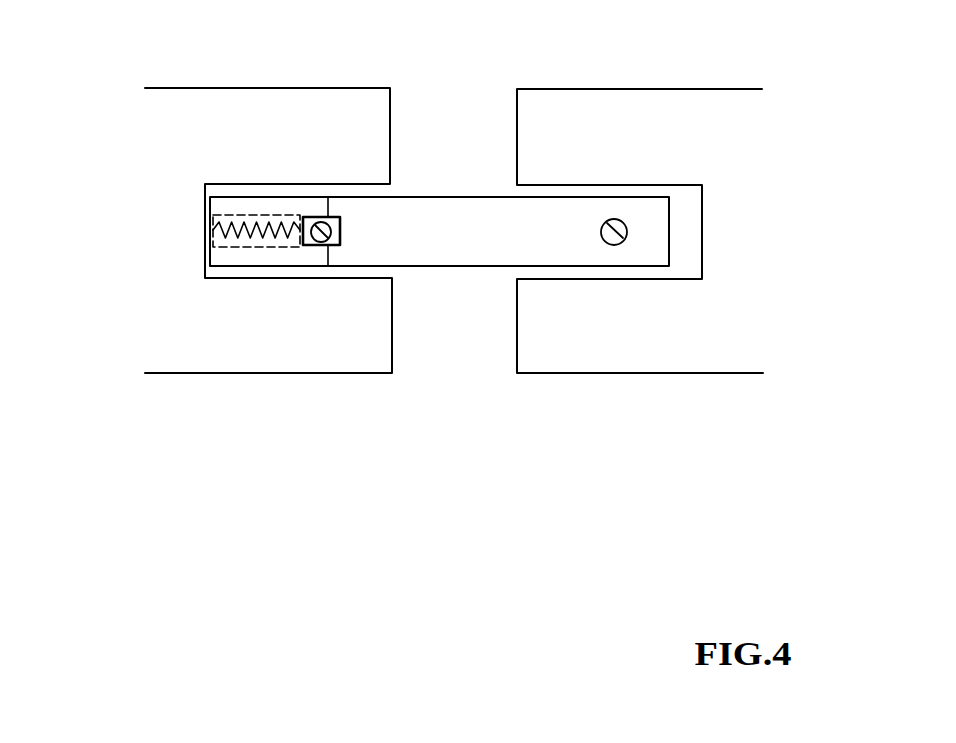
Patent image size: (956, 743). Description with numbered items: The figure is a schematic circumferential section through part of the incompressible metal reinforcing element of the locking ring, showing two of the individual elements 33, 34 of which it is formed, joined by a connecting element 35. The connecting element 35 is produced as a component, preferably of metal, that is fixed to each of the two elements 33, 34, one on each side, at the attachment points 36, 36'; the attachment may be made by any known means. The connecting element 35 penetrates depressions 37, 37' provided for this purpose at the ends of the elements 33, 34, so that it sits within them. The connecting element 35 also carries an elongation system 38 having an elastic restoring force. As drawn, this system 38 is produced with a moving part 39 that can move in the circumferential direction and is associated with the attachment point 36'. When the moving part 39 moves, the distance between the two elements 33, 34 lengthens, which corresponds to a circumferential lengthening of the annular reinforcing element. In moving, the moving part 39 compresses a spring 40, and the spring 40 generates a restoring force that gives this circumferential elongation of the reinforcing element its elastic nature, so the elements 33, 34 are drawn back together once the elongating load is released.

The element 33 is at (273, 140).
The element 34 is at (680, 118).
The connecting element 35 is at (457, 252).
The attachment point 36 is at (641, 331).
The attachment point 36' is at (296, 364).
The depression 37 is at (763, 256).
The depression 37' is at (152, 370).
The elongation system 38 is at (201, 189).
The moving part 39 is at (332, 217).
The spring 40 is at (217, 233).